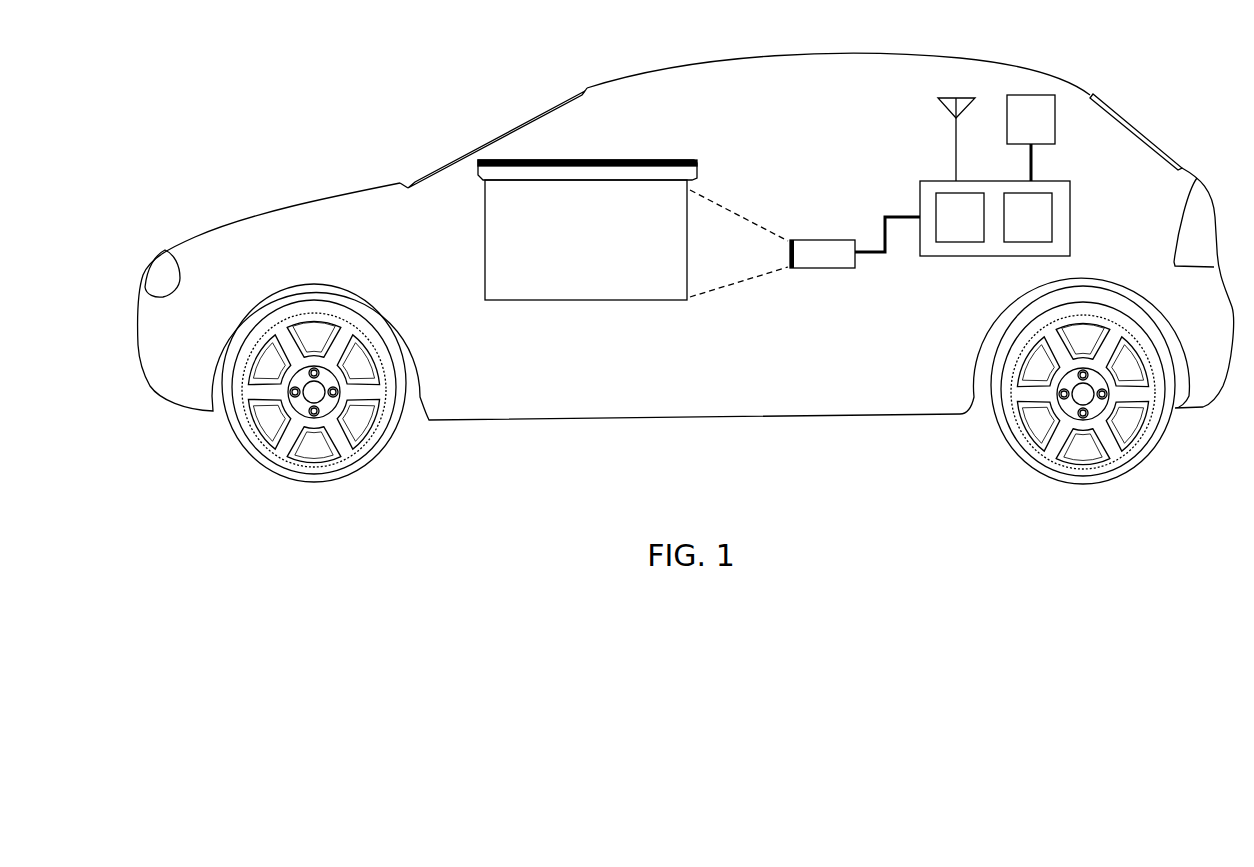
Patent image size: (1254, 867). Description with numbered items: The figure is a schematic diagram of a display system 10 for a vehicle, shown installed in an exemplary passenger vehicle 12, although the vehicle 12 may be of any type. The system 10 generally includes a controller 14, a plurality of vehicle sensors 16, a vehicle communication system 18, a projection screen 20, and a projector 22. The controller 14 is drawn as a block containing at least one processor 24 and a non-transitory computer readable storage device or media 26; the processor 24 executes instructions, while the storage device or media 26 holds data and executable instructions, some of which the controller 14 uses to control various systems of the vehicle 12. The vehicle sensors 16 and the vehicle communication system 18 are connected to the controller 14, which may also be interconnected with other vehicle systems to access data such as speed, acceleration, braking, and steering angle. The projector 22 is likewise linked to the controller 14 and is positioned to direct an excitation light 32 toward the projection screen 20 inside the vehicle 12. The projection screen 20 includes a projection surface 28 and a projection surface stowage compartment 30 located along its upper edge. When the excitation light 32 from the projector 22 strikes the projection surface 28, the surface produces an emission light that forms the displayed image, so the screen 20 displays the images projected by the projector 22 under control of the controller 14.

The display system 10 is at (487, 124).
The vehicle 12 is at (1004, 68).
The controller 14 is at (1071, 254).
The vehicle sensors 16 is at (1019, 132).
The vehicle communication system 18 is at (943, 113).
The projection screen 20 is at (471, 191).
The projector 22 is at (819, 270).
The processor 24 is at (948, 229).
The computer readable storage device or media 26 is at (1016, 229).
The projection surface 28 is at (572, 250).
The projection surface stowage compartment 30 is at (656, 161).
The excitation light 32 is at (762, 213).